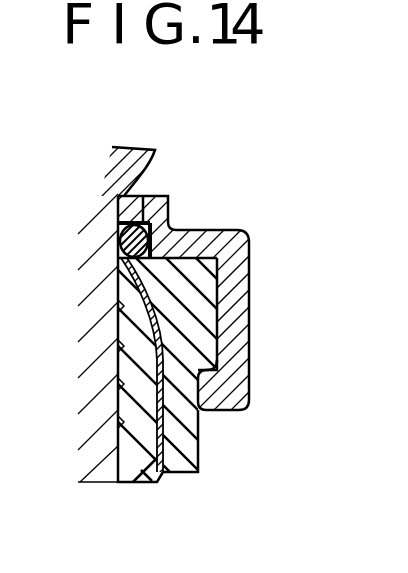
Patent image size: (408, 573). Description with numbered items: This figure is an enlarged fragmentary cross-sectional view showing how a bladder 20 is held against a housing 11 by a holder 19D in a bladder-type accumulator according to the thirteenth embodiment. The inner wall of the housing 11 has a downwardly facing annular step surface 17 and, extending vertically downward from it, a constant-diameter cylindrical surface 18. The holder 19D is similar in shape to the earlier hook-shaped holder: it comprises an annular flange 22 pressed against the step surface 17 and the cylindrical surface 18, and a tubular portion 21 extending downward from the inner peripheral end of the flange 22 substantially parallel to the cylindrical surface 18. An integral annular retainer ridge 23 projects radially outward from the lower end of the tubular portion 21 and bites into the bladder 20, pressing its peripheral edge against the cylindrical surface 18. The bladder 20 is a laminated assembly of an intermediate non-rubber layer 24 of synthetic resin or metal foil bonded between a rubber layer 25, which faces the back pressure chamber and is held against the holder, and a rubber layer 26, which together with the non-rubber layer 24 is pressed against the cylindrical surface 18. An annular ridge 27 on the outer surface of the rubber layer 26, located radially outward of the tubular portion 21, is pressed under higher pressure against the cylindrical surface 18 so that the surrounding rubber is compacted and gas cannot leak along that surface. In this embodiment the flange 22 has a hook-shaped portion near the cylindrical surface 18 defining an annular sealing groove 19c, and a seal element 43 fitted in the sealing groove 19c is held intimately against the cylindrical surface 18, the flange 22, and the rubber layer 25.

The housing 11 is at (112, 171).
The annular step surface 17 is at (112, 203).
The cylindrical surface 18 is at (117, 417).
The annular sealing groove 19c is at (121, 207).
The holder 19D is at (328, 235).
The bladder 20 is at (192, 478).
The tubular portion 21 is at (242, 305).
The annular flange 22 is at (205, 242).
The annular retainer ridge 23 is at (238, 392).
The non-rubber layer 24 is at (160, 474).
The rubber layer 25 is at (197, 452).
The rubber layer 26 is at (140, 468).
The annular ridge 27 is at (120, 340).
The seal element 43 is at (115, 242).